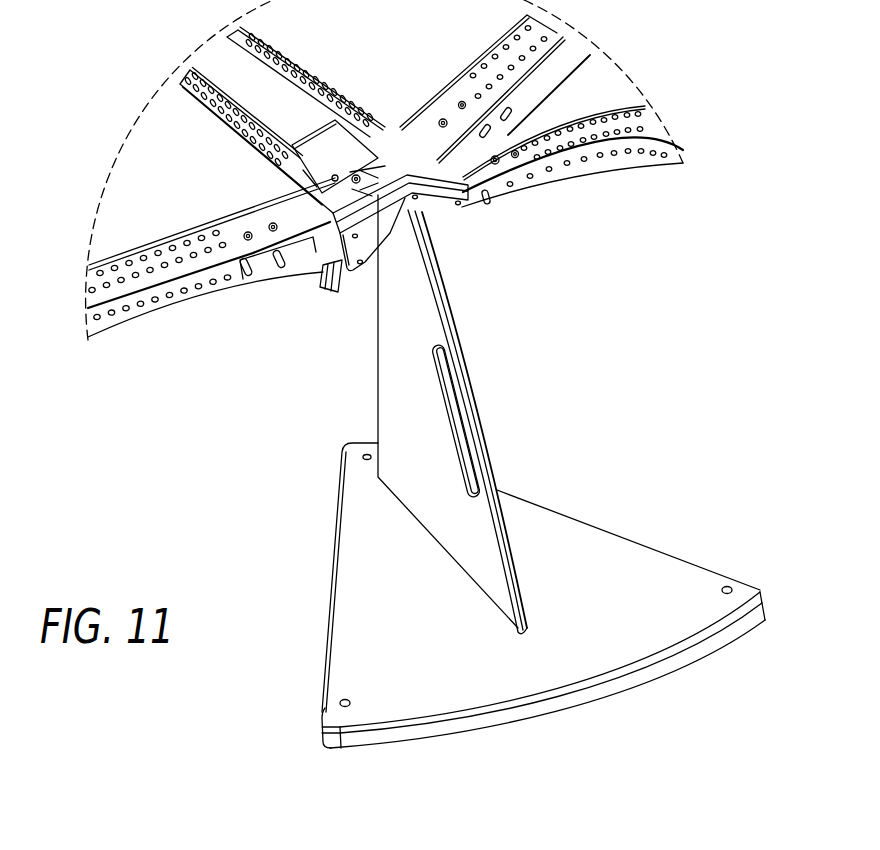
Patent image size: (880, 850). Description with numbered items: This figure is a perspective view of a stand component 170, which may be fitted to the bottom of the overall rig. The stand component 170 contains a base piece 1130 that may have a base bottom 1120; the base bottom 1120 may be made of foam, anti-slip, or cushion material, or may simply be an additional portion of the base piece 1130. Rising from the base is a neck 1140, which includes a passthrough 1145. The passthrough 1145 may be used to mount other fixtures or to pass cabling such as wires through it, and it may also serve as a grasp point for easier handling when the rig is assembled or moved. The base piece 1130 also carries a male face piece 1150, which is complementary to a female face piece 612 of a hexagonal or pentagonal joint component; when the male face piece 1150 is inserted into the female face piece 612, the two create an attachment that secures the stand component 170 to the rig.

The stand component 170 is at (200, 470).
The female face piece 612 is at (379, 190).
The base bottom 1120 is at (682, 658).
The base piece 1130 is at (362, 583).
The neck 1140 is at (420, 294).
The passthrough 1145 is at (453, 387).
The male face piece 1150 is at (341, 245).